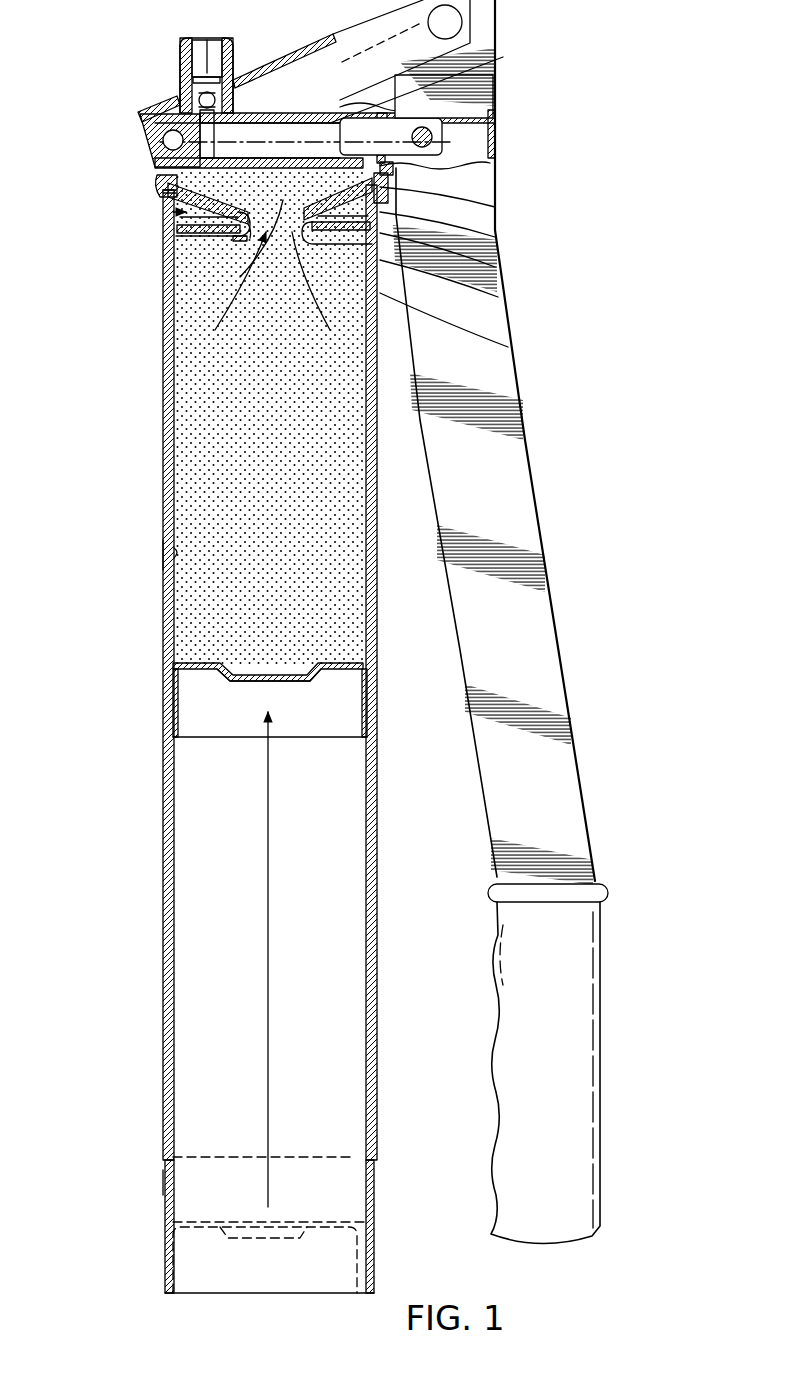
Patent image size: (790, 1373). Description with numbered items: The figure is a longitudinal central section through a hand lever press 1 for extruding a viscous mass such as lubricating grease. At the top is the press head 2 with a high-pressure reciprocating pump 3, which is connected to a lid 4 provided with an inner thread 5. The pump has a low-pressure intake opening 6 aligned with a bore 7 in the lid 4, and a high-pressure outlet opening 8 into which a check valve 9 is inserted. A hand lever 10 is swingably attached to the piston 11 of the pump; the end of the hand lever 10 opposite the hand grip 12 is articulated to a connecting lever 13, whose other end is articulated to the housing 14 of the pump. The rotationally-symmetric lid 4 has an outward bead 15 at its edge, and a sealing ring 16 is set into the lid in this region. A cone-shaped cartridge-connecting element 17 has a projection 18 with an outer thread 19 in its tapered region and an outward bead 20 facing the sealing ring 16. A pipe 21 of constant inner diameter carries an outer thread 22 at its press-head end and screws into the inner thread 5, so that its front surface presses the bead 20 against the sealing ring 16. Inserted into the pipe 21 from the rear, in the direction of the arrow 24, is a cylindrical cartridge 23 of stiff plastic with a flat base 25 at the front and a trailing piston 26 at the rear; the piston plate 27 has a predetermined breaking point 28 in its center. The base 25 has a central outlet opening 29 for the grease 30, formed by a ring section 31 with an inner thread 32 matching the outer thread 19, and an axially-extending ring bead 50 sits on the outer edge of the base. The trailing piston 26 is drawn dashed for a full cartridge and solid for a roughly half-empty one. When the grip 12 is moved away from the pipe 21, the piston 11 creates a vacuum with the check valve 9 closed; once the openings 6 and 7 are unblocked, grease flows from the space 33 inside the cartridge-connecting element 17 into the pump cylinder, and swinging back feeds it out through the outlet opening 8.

The hand lever press 1 is at (588, 137).
The press head 2 is at (148, 104).
The high-pressure reciprocating pump 3 is at (369, 97).
The lid 4 is at (160, 183).
The inner thread 5 is at (172, 212).
The low-pressure intake opening 6 is at (442, 86).
The bore 7 is at (496, 238).
The high-pressure outlet opening 8 is at (226, 100).
The check valve 9 is at (178, 58).
The hand lever 10 is at (540, 690).
The piston 11 is at (441, 133).
The hand grip 12 is at (590, 1090).
The connecting lever 13 is at (343, 40).
The housing 14 is at (163, 136).
The bead 15 is at (392, 180).
The sealing ring 16 is at (496, 207).
The cartridge-connecting element 17 is at (172, 200).
The projection 18 is at (248, 228).
The outer thread 19 is at (508, 347).
The bead 20 is at (168, 192).
The pipe 21 is at (167, 476).
The outer thread 22 is at (497, 268).
The cartridge 23 is at (175, 552).
The arrow 24 is at (267, 942).
The base 25 is at (176, 233).
The trailing piston 26 is at (178, 702).
The piston plate 27 is at (342, 664).
The predetermined breaking point 28 is at (282, 683).
The outlet opening 29 is at (262, 236).
The grease 30 is at (356, 482).
The ring section 31 is at (498, 298).
The inner thread 32 is at (233, 240).
The space 33 is at (290, 205).
The ring bead 50 is at (180, 225).